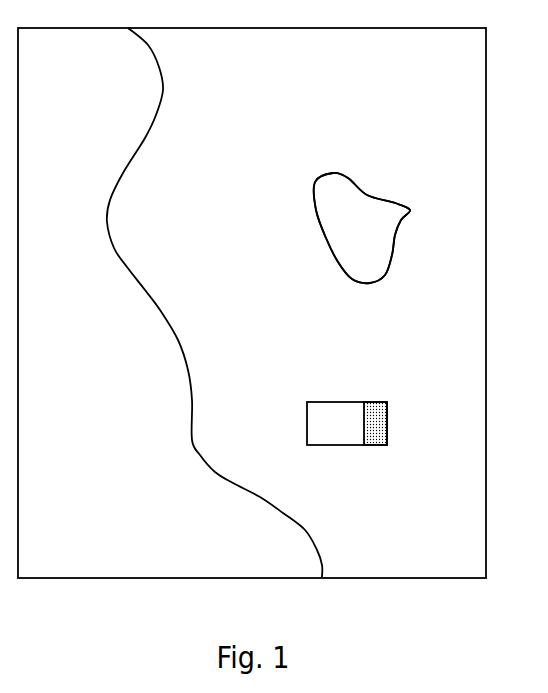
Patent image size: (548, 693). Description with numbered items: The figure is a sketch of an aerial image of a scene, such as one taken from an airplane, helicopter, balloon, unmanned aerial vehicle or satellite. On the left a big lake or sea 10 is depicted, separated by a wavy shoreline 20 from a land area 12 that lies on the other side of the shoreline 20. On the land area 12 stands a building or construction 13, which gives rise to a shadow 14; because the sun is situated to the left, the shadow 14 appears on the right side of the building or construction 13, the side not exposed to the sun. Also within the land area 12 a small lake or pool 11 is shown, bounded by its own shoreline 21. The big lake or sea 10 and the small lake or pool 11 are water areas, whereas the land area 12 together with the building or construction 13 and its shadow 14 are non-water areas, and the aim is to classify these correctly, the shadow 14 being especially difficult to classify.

The big lake or sea 10 is at (78, 422).
The small lake or pool 11 is at (338, 243).
The land area 12 is at (236, 319).
The building or construction 13 is at (320, 436).
The shadow 14 is at (390, 418).
The shoreline 20 is at (178, 97).
The shoreline 21 is at (303, 174).